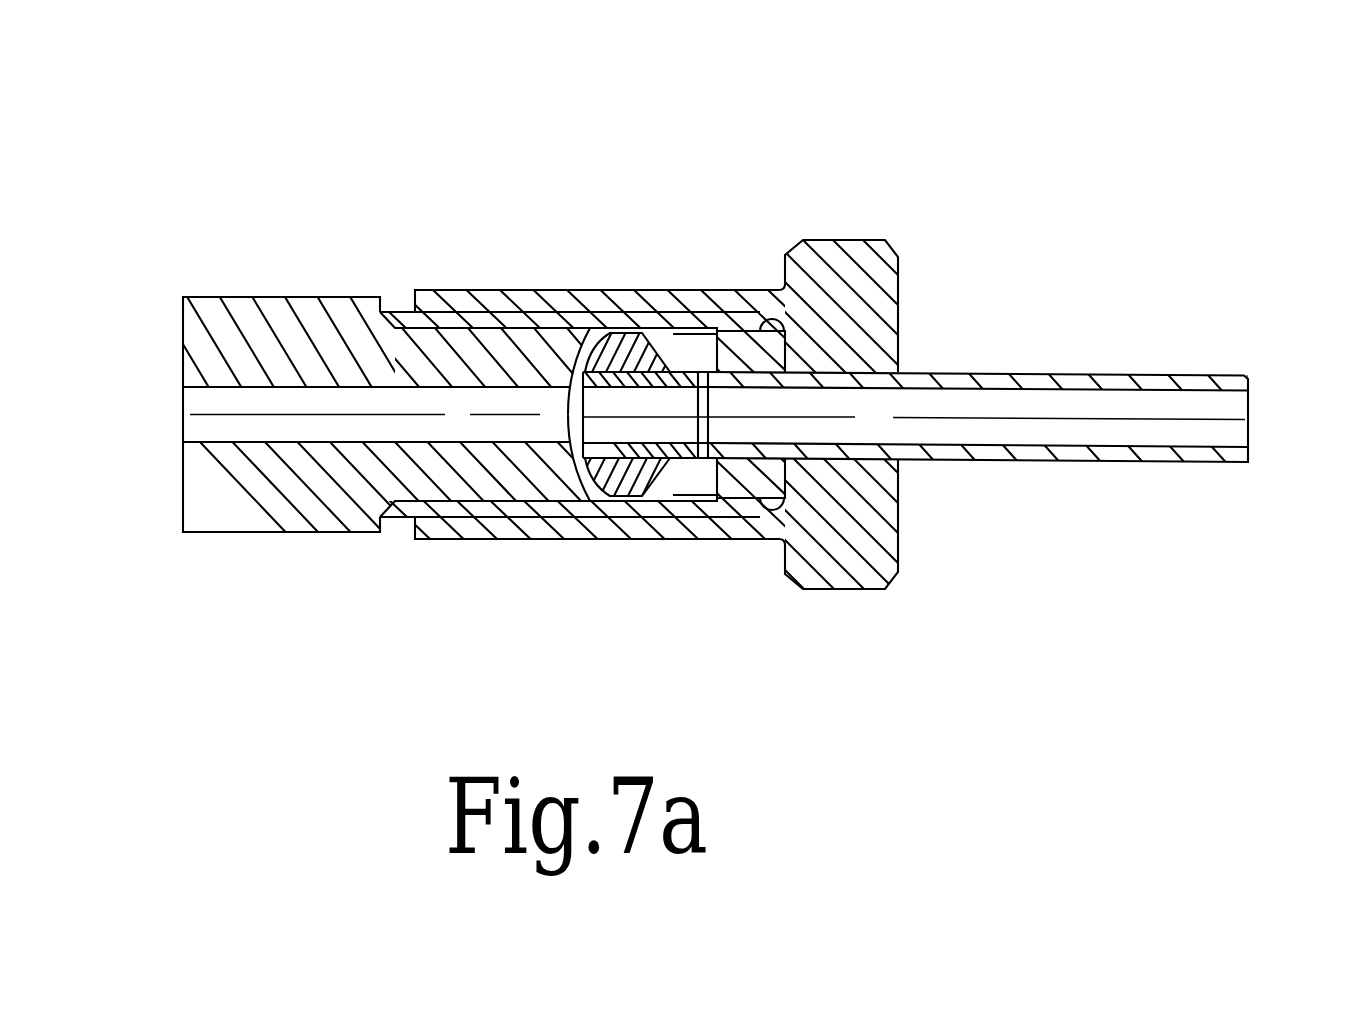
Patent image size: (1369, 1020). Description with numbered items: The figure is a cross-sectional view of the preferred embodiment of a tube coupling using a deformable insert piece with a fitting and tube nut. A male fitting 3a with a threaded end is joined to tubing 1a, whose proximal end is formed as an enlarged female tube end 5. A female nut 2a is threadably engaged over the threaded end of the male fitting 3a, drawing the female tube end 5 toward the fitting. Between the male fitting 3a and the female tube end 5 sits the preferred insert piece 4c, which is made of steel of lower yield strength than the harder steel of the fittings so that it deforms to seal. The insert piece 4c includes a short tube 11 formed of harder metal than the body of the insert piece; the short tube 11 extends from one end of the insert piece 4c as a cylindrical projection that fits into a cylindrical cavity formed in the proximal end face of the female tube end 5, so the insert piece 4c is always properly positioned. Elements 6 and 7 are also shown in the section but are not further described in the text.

The tubing 1a is at (1072, 372).
The female nut 2a is at (832, 240).
The male fitting 3a is at (275, 295).
The insert piece 4c is at (605, 498).
The female tube end 5 is at (790, 517).
The sealing element 6 is at (667, 338).
The ball seal 7 is at (583, 337).
The short tube 11 is at (722, 464).